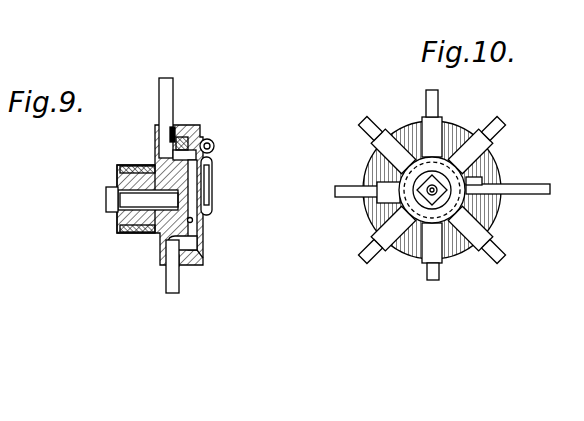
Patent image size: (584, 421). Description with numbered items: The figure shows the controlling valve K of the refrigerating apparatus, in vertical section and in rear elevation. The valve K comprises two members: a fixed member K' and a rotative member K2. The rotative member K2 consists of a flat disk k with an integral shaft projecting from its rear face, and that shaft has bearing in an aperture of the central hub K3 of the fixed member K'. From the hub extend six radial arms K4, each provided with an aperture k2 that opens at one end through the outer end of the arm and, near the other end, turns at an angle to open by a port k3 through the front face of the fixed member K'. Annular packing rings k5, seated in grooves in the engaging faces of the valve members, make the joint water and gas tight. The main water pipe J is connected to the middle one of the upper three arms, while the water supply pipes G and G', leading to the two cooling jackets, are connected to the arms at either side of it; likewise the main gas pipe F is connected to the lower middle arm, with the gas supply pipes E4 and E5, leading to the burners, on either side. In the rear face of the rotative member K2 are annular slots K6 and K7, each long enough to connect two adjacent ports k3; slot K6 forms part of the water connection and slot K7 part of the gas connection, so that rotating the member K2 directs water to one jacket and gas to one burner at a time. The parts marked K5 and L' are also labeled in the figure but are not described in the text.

In FIG. 9, the main water pipe J is at (169, 77).
In FIG. 10, the main water pipe J is at (437, 106).
In FIG. 9, the main gas pipe F is at (172, 293).
In FIG. 10, the main gas pipe F is at (438, 275).
In FIG. 10, the controlling valve K is at (426, 233).
In FIG. 9, the fixed member K' is at (129, 187).
In FIG. 10, the fixed member K' is at (442, 173).
In FIG. 9, the rotative member K2 is at (196, 130).
In FIG. 9, the central hub K3 is at (123, 180).
In FIG. 10, the central hub K3 is at (468, 202).
In FIG. 9, the radial arms K4 is at (157, 125).
In FIG. 10, the radial arms K4 is at (420, 146).
In FIG. 9, the valve insert K5 is at (184, 136).
In FIG. 9, the annular slot K6 is at (208, 150).
In FIG. 9, the annular slot K7 is at (200, 238).
In FIG. 9, the flat disk k is at (203, 222).
In FIG. 9, the apertures k2 is at (173, 128).
In FIG. 9, the ports k3 is at (206, 139).
In FIG. 9, the annular packing rings k5 is at (213, 172).
In FIG. 9, the pipe connection L' is at (255, 127).
In FIG. 10, the water supply pipe G is at (484, 128).
In FIG. 10, the water supply pipe G' is at (386, 128).
In FIG. 10, the gas supply pipe E4 is at (502, 255).
In FIG. 10, the gas supply pipe E5 is at (371, 259).